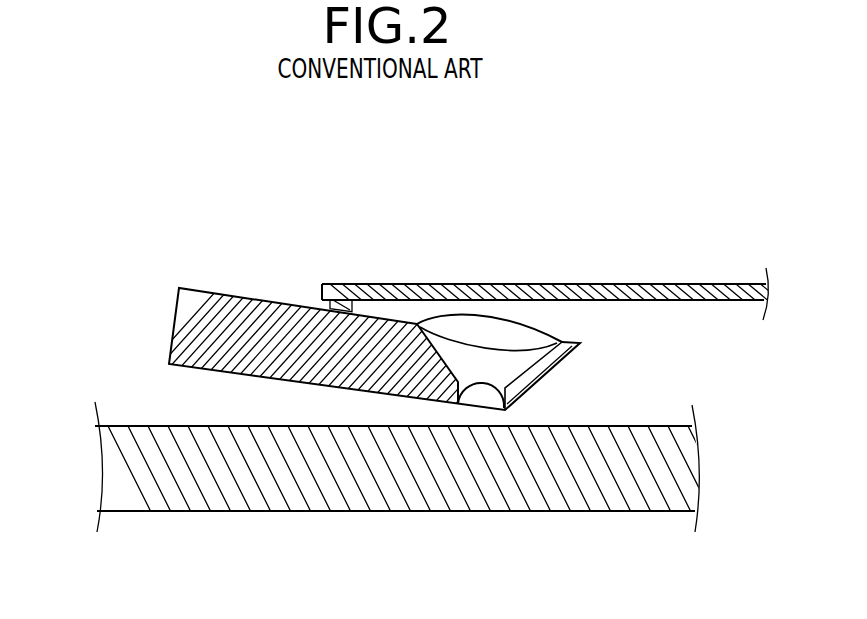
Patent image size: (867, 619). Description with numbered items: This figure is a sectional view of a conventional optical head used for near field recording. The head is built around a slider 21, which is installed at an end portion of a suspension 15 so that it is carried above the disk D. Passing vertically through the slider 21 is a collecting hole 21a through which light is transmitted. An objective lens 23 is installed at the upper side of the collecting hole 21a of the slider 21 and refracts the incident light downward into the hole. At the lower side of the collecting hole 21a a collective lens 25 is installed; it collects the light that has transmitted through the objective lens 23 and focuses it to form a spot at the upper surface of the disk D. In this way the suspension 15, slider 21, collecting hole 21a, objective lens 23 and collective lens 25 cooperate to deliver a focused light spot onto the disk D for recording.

The suspension 15 is at (388, 287).
The slider 21 is at (285, 308).
The collecting hole 21a is at (513, 360).
The objective lens 23 is at (532, 333).
The collective lens 25 is at (528, 377).
The disk D is at (637, 487).